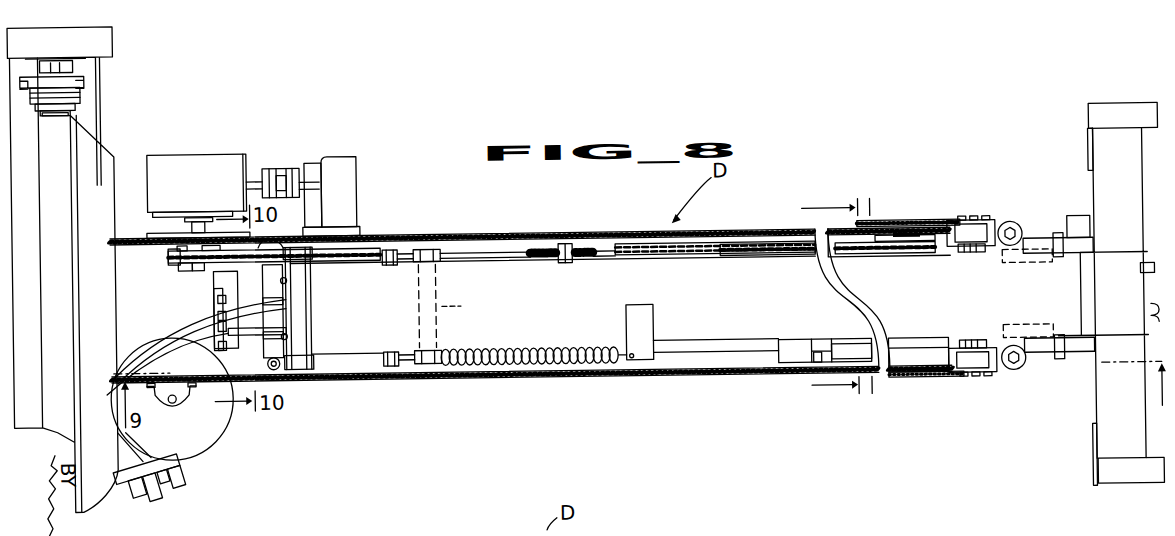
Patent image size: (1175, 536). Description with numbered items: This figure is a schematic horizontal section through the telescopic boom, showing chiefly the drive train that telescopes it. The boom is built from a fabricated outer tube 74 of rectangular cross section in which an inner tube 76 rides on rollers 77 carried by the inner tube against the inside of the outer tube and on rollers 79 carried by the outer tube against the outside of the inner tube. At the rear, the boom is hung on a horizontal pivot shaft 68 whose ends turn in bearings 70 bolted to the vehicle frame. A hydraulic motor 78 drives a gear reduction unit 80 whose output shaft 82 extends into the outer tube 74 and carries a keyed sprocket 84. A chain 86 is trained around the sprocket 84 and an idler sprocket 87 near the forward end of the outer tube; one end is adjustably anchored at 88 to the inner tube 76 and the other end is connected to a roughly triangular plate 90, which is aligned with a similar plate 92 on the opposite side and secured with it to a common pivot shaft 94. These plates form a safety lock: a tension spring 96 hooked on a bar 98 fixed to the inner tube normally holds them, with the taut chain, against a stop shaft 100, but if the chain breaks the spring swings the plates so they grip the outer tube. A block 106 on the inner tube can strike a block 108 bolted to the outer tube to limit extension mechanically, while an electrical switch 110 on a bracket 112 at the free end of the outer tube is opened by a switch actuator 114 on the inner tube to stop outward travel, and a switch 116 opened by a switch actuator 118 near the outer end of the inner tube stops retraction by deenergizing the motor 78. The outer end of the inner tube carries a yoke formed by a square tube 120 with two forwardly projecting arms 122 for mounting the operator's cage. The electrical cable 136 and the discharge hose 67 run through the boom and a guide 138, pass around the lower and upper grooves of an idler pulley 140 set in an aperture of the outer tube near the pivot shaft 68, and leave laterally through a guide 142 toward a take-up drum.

The discharge hose 67 is at (268, 340).
The horizontal pivot shaft 68 is at (72, 113).
The bearings 70 is at (60, 94).
The outer tube 74 is at (490, 239).
The inner tube 76 is at (558, 316).
The rollers 77 is at (268, 250).
The hydraulic motor 78 is at (345, 175).
The rollers 79 is at (1025, 337).
The gear reduction unit 80 is at (205, 163).
The output shaft 82 is at (170, 222).
The sprocket 84 is at (183, 269).
The chain 86 is at (213, 266).
The idler sprocket 87 is at (897, 265).
The chain anchor 88 is at (605, 251).
The plate 90 is at (380, 254).
The plate 92 is at (404, 371).
The pivot shaft 94 is at (441, 311).
The tension spring 96 is at (555, 353).
The bar 98 is at (641, 322).
The stop shaft 100 is at (393, 353).
The block 106 is at (792, 350).
The block 108 is at (972, 388).
The electrical switch 110 is at (1005, 383).
The bracket 112 is at (905, 231).
The switch actuator 114 is at (817, 372).
The switch 116 is at (982, 247).
The switch actuator 118 is at (1078, 235).
The square tube 120 is at (1133, 207).
The arms 122 is at (1122, 127).
The cable 136 is at (268, 304).
The guide 138 is at (212, 326).
The idler pulley 140 is at (195, 444).
The guide 142 is at (183, 468).